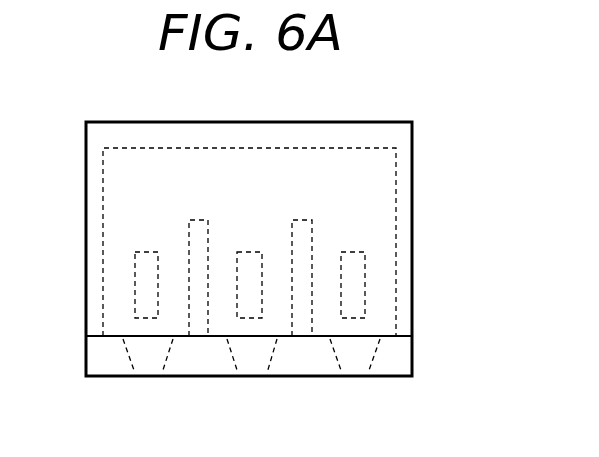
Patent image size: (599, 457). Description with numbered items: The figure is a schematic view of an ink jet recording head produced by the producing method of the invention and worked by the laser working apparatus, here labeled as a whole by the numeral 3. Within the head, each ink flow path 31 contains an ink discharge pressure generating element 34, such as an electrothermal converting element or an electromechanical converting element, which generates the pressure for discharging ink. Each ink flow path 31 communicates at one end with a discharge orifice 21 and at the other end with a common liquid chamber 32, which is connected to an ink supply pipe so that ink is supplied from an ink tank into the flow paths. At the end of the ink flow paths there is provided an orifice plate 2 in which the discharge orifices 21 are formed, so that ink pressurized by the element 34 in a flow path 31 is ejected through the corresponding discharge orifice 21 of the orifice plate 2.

The orifice plate 2 is at (395, 365).
The display panel 3 is at (347, 128).
The discharge orifice 21 is at (143, 372).
The ink flow path 31 is at (382, 231).
The common liquid chamber 32 is at (247, 158).
The ink discharge pressure generating element 34 is at (360, 268).